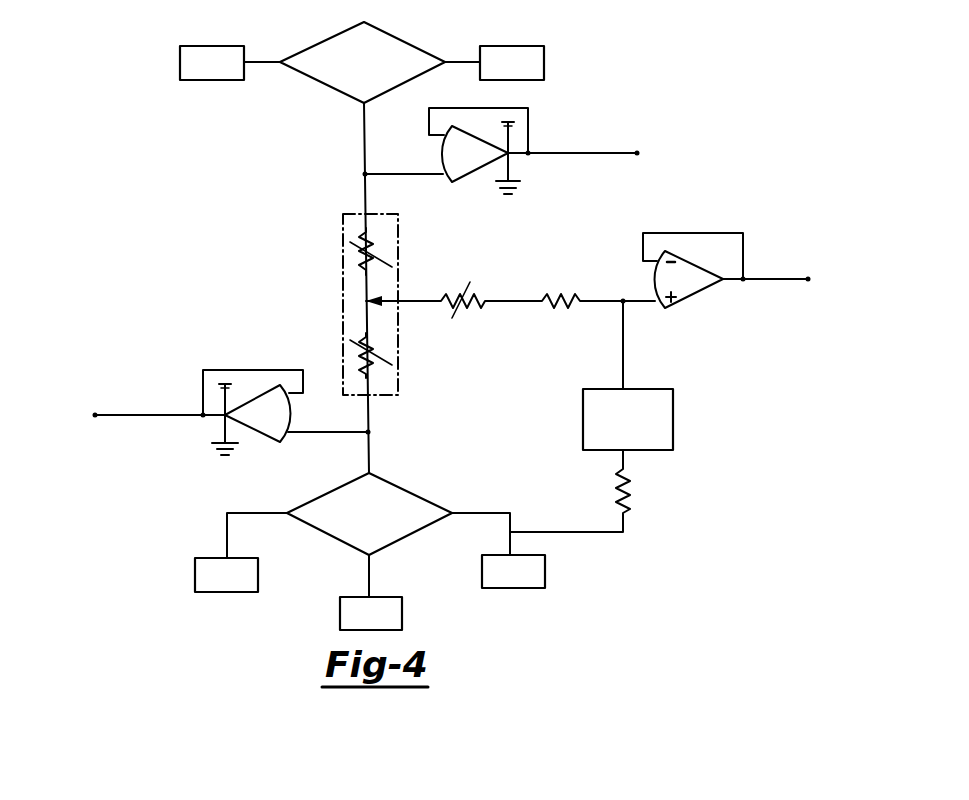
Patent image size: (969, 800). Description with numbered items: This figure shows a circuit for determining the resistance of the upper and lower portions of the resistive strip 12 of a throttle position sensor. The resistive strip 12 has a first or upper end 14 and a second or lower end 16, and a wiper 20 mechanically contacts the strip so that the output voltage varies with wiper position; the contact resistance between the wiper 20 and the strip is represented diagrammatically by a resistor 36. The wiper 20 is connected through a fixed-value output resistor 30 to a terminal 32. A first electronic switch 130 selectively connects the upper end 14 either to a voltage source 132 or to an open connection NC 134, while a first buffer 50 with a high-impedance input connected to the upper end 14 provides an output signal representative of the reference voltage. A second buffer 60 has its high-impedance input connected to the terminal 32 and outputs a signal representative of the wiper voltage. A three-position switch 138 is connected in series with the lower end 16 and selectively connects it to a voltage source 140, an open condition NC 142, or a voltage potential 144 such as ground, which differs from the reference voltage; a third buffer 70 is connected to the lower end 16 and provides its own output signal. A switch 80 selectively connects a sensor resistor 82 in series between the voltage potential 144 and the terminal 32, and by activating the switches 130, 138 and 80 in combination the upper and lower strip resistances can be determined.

The resistive strip 12 is at (356, 300).
The first end of the strip 14 is at (343, 214).
The second end of the strip 16 is at (398, 390).
The wiper 20 is at (379, 301).
The output resistor 30 is at (583, 310).
The terminal 32 is at (623, 283).
The resistor 36 is at (452, 320).
The first buffer 50 is at (472, 178).
The second buffer 60 is at (692, 292).
The third buffer 70 is at (255, 433).
The switch 80 is at (673, 420).
The sensor resistor 82 is at (628, 504).
The first electronic switch 130 is at (402, 28).
The preset voltage source 132 is at (180, 64).
The open connection NC 134 is at (545, 62).
The three-position switch 138 is at (396, 486).
The voltage source 140 is at (195, 576).
The open condition NC 142 is at (340, 616).
The voltage potential 144 is at (546, 572).